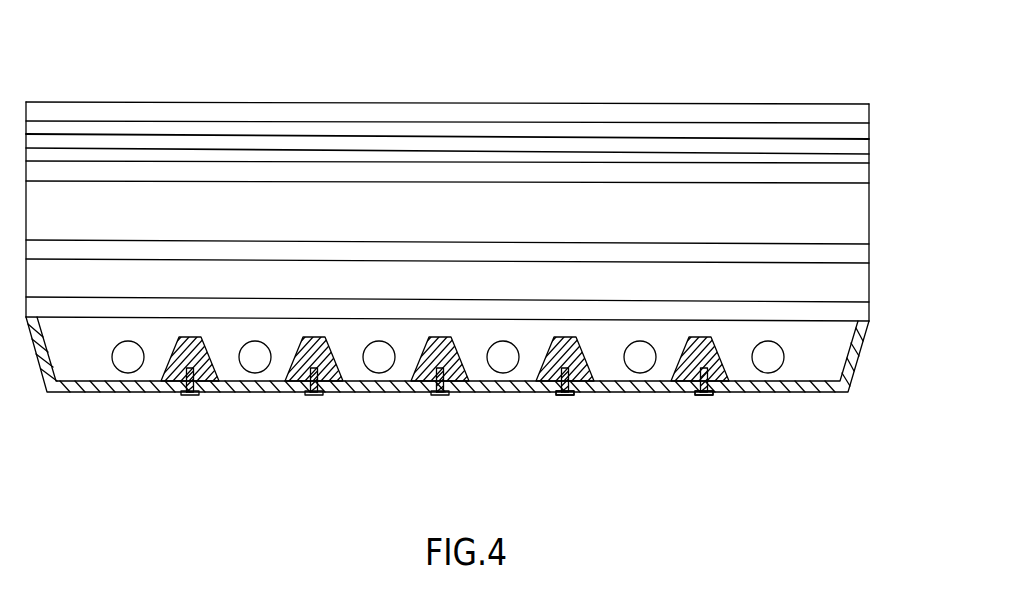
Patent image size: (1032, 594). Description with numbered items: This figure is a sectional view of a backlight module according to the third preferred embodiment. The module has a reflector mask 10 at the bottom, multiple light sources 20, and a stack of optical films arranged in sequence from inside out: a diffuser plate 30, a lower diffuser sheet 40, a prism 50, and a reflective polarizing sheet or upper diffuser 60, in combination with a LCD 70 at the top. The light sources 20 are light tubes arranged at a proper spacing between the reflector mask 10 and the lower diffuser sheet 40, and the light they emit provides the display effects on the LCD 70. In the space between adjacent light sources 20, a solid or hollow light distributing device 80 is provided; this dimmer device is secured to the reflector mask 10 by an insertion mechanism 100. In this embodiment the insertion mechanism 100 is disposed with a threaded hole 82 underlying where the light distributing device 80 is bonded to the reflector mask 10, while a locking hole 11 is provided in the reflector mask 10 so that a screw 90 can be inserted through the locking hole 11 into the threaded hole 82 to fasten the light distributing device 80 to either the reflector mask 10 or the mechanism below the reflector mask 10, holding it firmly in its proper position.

The reflector mask 10 is at (447, 402).
The locking hole 11 is at (447, 427).
The light sources 20 is at (441, 410).
The diffuser plate 30 is at (480, 317).
The lower diffuser sheet 40 is at (480, 252).
The prism 50 is at (482, 174).
The reflective polarizing sheet or upper diffuser 60 is at (450, 101).
The LCD 70 is at (447, 77).
The light distributing device 80 is at (444, 408).
The threaded hole 82 is at (611, 434).
The screw 90 is at (450, 449).
The insertion mechanism 100 is at (430, 392).